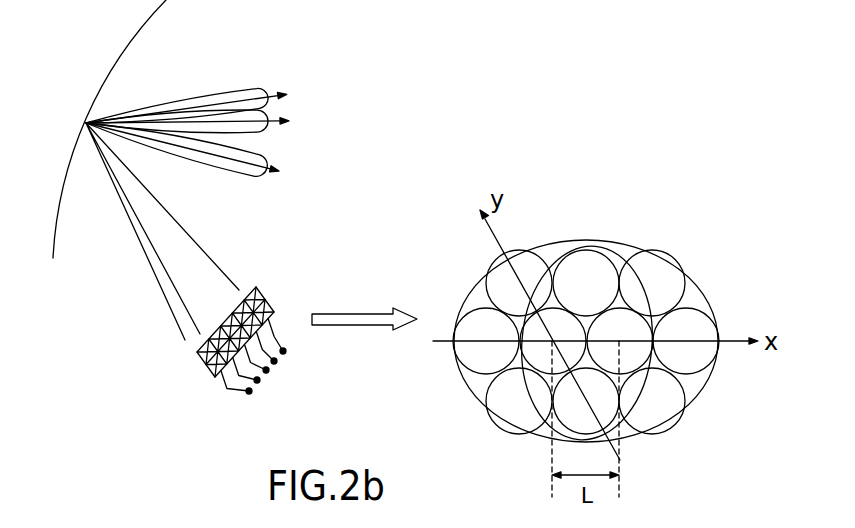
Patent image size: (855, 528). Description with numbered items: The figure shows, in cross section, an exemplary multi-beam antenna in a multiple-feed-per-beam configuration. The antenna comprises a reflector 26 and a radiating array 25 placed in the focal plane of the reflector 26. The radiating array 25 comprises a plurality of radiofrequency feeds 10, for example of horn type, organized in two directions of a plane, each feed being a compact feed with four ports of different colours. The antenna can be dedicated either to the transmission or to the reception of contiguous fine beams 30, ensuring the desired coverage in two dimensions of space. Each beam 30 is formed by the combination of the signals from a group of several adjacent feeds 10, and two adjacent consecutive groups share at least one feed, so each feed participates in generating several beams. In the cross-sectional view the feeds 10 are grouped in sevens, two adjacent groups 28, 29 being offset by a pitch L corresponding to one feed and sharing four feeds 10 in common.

The radiofrequency feed 10 is at (196, 352).
The radiating array 25 is at (267, 288).
The reflector 26 is at (107, 73).
The group of feeds 28 is at (477, 382).
The group of feeds 29 is at (695, 293).
The beam 30 is at (245, 90).